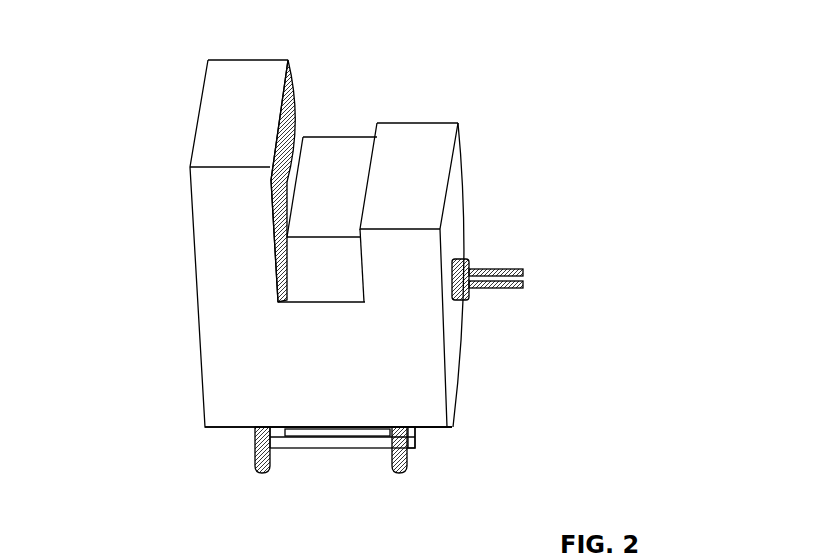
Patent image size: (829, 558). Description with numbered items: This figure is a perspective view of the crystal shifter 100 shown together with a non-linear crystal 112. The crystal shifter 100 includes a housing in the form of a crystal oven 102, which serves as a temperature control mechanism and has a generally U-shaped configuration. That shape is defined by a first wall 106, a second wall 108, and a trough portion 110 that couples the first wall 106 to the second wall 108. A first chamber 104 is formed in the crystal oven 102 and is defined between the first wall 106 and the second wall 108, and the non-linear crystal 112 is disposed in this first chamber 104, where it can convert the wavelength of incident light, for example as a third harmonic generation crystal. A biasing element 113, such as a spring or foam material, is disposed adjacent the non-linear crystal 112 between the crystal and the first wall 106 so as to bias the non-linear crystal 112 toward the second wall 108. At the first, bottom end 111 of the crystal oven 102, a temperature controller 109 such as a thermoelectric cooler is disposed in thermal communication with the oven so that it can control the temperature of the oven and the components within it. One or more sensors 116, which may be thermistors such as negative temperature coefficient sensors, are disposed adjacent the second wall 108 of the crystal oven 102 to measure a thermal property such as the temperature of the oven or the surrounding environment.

The crystal shifter 100 is at (160, 87).
The crystal oven 102 is at (430, 119).
The first chamber 104 is at (346, 200).
The first wall 106 is at (237, 70).
The second wall 108 is at (447, 190).
The temperature controller 109 is at (302, 446).
The trough portion 110 is at (326, 395).
The first (bottom) end 111 is at (425, 429).
The non-linear crystal 112 is at (343, 150).
The biasing element 113 is at (293, 157).
The sensors 116 is at (459, 277).